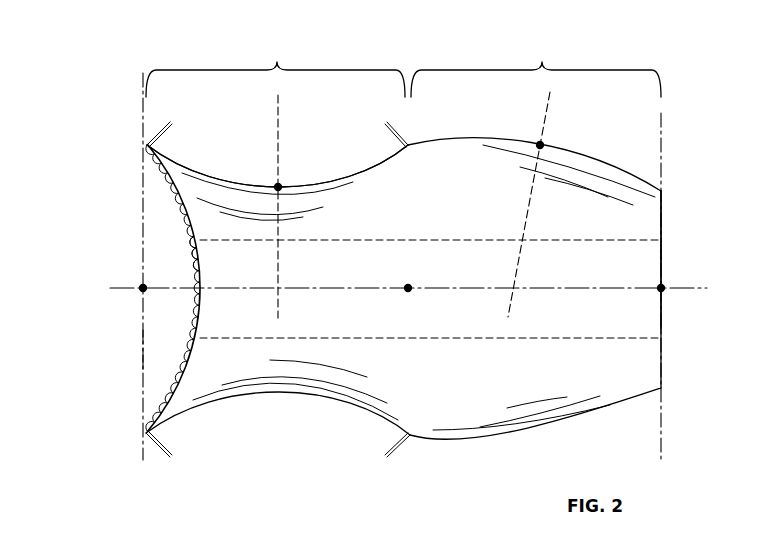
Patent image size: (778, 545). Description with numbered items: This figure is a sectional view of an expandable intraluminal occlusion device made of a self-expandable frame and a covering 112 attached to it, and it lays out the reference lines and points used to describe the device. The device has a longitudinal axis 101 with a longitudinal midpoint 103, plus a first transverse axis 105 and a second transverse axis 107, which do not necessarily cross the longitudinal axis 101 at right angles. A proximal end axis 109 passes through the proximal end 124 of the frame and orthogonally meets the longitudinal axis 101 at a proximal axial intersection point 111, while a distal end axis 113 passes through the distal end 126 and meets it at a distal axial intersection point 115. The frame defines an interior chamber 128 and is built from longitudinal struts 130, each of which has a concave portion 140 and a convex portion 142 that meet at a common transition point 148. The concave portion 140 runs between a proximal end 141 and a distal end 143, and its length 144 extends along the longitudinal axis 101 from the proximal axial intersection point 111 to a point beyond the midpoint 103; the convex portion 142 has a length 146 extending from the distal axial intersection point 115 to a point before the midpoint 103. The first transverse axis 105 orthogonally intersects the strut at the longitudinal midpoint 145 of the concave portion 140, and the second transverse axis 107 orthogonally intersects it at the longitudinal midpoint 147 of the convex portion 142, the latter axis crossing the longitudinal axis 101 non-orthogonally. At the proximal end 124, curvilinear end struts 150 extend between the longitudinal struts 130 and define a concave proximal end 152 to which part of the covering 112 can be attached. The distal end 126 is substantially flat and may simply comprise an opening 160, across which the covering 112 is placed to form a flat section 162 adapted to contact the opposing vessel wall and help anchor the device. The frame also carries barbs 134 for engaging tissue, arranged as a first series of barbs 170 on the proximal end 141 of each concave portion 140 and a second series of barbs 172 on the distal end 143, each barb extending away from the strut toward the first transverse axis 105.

The longitudinal axis 101 is at (352, 290).
The longitudinal midpoint 103 is at (408, 286).
The first transverse axis 105 is at (278, 100).
The second transverse axis 107 is at (548, 100).
The proximal end axis 109 is at (143, 222).
The proximal axial intersection point 111 is at (143, 290).
The covering 112 is at (403, 289).
The distal end axis 113 is at (663, 163).
The distal axial intersection point 115 is at (659, 288).
The proximal end 124 is at (125, 348).
The distal end 126 is at (681, 217).
The interior chamber 128 is at (628, 306).
The longitudinal struts 130 is at (571, 248).
The barbs 134 is at (152, 131).
The concave portion 140 is at (321, 182).
The proximal end of concave portion 141 is at (150, 146).
The convex portion 142 is at (629, 172).
The distal end of concave portion 143 is at (406, 147).
The length of concave portion 144 is at (275, 68).
The longitudinal midpoint of concave portion 145 is at (278, 187).
The length of convex portion 146 is at (536, 68).
The longitudinal midpoint of convex portion 147 is at (542, 146).
The transition point 148 is at (410, 145).
The curvilinear end struts 150 is at (187, 228).
The concave proximal end 152 is at (190, 261).
The opening 160 is at (695, 277).
The flat section 162 is at (663, 248).
The first series of barbs 170 is at (157, 450).
The second series of barbs 172 is at (400, 444).